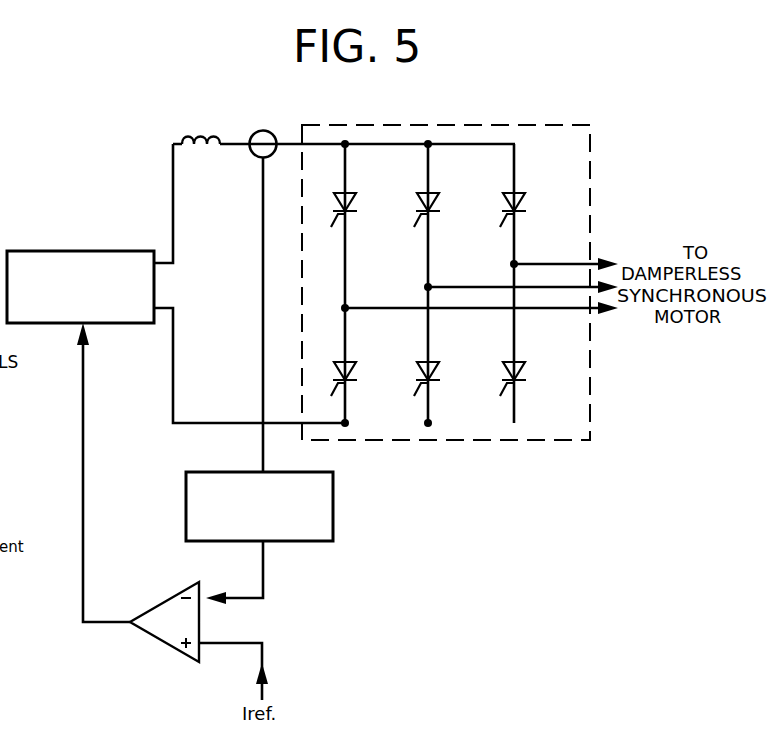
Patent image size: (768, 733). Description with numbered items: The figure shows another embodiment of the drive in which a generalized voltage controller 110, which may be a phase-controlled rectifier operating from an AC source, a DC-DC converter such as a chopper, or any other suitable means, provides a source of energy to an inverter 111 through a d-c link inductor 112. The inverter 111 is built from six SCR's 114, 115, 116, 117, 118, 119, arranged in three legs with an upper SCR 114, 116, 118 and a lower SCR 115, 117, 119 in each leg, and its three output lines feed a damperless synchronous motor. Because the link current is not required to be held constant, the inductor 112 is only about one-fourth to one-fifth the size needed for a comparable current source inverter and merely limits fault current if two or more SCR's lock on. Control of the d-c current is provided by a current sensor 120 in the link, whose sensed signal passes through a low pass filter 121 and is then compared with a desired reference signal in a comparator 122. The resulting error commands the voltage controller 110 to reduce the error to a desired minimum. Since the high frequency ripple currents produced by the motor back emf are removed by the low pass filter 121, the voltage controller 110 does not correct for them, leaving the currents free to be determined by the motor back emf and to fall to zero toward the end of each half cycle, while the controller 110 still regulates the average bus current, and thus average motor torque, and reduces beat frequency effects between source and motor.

The voltage controller 110 is at (66, 251).
The inverter 111 is at (430, 125).
The inductor 112 is at (199, 138).
The SCR 114 is at (337, 200).
The SCR 115 is at (337, 369).
The SCR 116 is at (420, 200).
The SCR 117 is at (420, 369).
The SCR 118 is at (506, 200).
The SCR 119 is at (506, 369).
The current sensor 120 is at (262, 131).
The low pass filter 121 is at (240, 472).
The comparator 122 is at (160, 600).